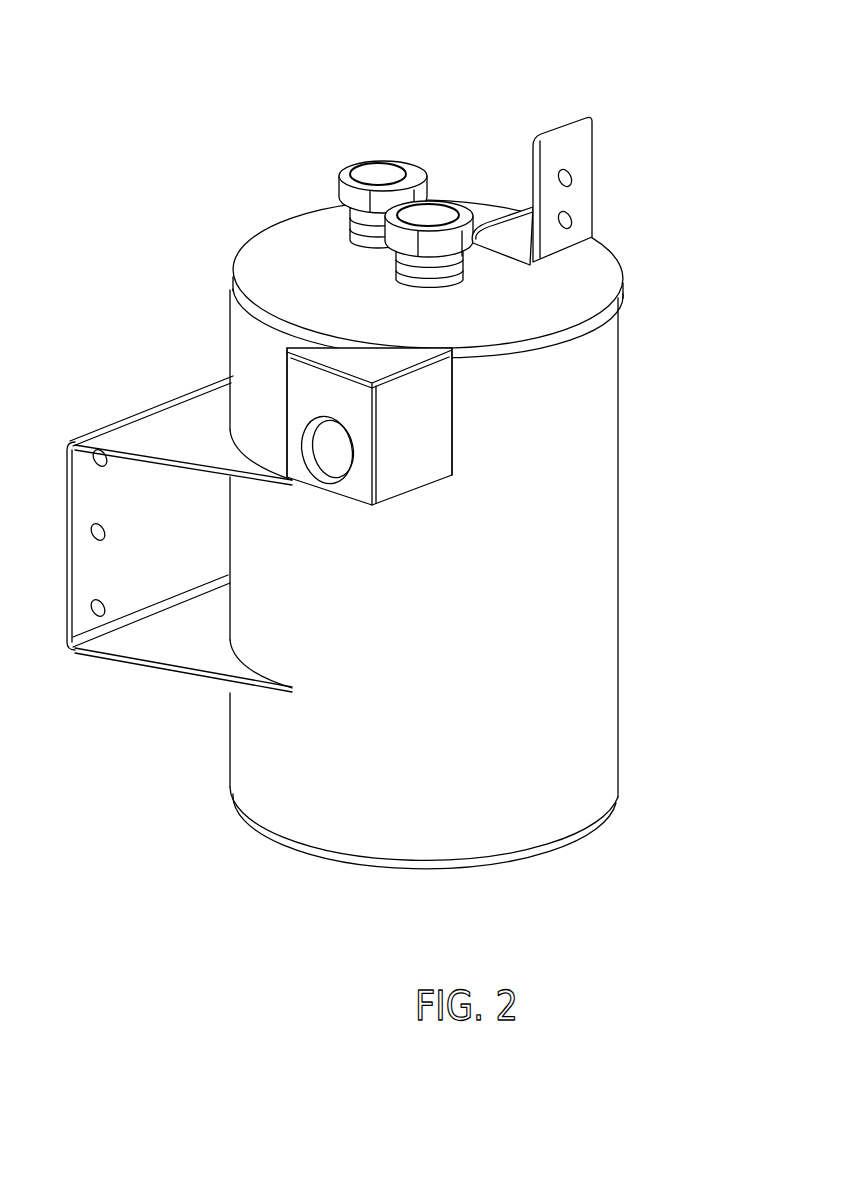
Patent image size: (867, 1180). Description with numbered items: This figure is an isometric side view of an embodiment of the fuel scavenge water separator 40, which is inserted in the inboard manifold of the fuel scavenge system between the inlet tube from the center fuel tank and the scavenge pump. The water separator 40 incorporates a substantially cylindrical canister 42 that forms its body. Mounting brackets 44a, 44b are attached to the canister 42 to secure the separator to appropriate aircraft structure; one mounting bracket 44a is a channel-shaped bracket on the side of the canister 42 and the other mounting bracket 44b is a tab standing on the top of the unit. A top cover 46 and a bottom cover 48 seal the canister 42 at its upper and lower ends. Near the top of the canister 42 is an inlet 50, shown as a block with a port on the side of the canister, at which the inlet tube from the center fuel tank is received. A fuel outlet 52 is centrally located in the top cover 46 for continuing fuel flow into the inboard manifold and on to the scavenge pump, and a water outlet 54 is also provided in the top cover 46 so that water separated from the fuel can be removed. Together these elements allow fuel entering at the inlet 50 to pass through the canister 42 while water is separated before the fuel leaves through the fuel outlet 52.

The water separator 40 is at (380, 458).
The canister 42 is at (573, 557).
The mounting bracket 44a is at (158, 428).
The mounting bracket 44b is at (562, 142).
The top cover 46 is at (283, 262).
The bottom cover 48 is at (297, 840).
The inlet 50 is at (325, 466).
The fuel outlet 52 is at (427, 217).
The water outlet 54 is at (375, 177).